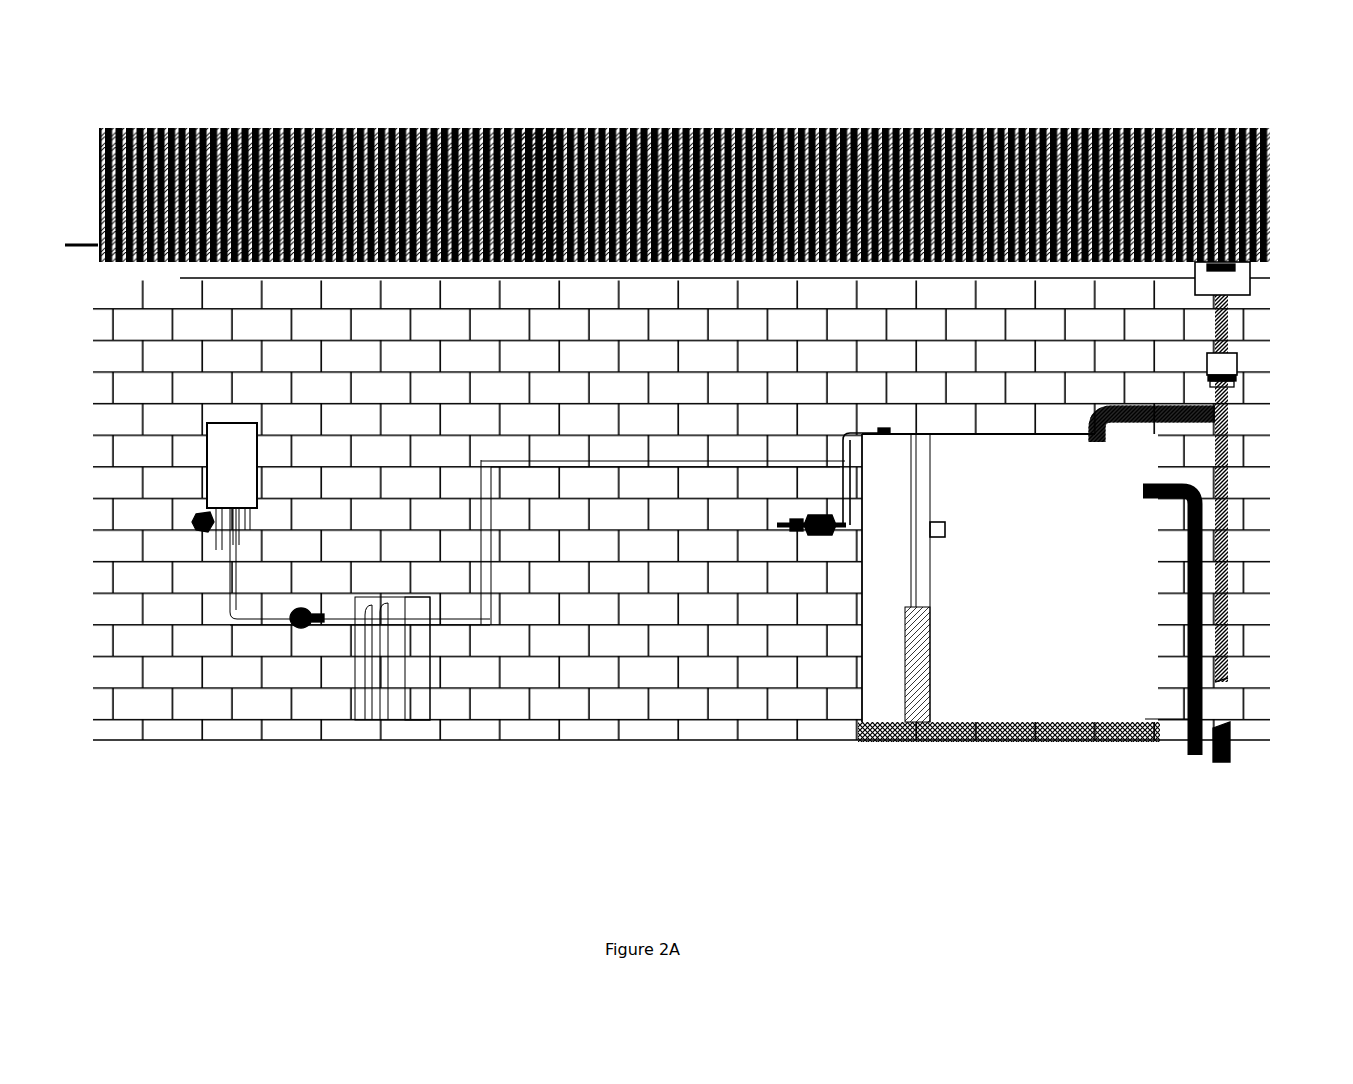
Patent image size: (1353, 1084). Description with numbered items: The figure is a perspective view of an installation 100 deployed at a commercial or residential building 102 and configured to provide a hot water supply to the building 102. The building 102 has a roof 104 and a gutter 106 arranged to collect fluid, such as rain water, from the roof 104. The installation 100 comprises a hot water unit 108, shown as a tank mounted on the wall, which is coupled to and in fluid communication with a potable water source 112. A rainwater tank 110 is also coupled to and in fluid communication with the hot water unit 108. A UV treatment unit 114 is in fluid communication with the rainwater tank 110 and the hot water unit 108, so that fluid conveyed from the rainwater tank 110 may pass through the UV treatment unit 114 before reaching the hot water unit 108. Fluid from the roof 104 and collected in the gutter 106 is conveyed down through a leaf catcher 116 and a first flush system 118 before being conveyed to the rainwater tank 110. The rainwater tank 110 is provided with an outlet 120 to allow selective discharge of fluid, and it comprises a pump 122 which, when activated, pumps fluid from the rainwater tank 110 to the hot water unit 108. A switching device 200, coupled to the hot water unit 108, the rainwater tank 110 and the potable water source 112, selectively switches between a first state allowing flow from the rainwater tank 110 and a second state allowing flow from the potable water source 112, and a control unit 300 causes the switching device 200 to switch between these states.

The installation 100 is at (291, 421).
The building 102 is at (252, 124).
The roof 104 is at (541, 127).
The gutter 106 is at (878, 276).
The hot water unit 108 is at (207, 488).
The rainwater tank 110 is at (985, 433).
The potable water source 112 is at (790, 527).
The UV treatment unit 114 is at (365, 722).
The leaf catcher 116 is at (1243, 278).
The first flush system 118 is at (1237, 364).
The outlet 120 is at (1172, 725).
The pump 122 is at (918, 700).
The switching device 200 is at (862, 450).
The control unit 300 is at (942, 540).